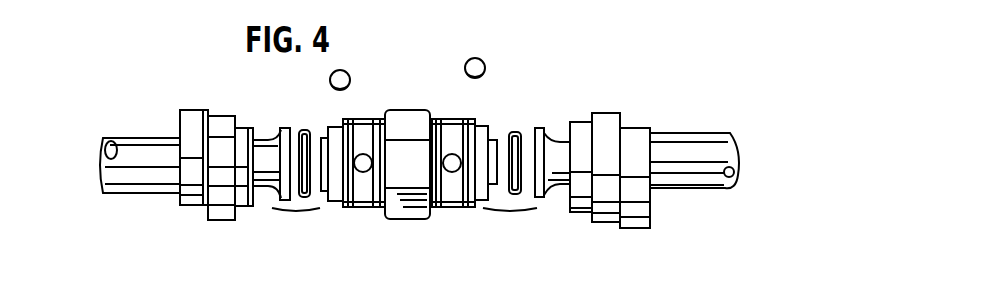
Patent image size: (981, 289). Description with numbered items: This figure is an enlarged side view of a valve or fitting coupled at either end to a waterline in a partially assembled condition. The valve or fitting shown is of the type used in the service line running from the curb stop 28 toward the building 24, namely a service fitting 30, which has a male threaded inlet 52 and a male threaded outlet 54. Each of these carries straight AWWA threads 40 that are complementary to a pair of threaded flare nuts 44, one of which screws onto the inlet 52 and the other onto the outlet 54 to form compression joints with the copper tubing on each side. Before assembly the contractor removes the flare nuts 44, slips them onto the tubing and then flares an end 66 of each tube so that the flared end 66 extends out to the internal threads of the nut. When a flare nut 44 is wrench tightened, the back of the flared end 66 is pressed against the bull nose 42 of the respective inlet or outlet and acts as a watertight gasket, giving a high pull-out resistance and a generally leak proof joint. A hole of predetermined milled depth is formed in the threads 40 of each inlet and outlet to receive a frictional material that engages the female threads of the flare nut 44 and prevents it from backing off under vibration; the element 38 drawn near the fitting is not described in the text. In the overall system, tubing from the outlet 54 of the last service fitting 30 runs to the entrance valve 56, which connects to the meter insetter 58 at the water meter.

The building 24 is at (288, 128).
The curb stop 28 is at (463, 118).
The service fitting 30 is at (402, 110).
The ball 38 is at (352, 119).
The AWWA threads 40 is at (485, 123).
The bull nose 42 is at (325, 122).
The flare nut 44 is at (208, 112).
The male threaded inlet 52 is at (365, 120).
The male threaded outlet 54 is at (457, 115).
The entrance valve 56 is at (366, 145).
The meter insetter 58 is at (458, 140).
The flared end 66 is at (295, 211).